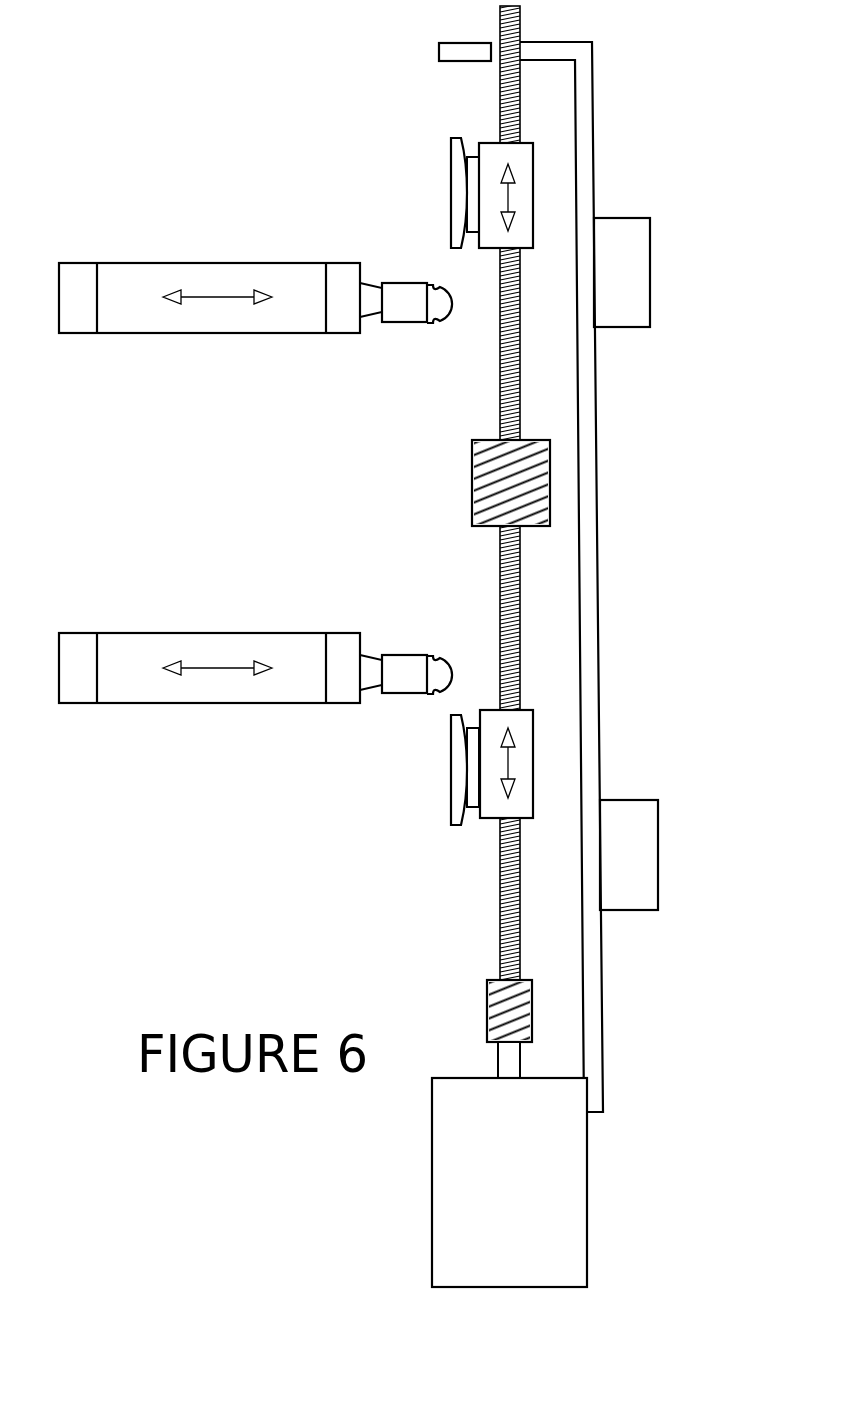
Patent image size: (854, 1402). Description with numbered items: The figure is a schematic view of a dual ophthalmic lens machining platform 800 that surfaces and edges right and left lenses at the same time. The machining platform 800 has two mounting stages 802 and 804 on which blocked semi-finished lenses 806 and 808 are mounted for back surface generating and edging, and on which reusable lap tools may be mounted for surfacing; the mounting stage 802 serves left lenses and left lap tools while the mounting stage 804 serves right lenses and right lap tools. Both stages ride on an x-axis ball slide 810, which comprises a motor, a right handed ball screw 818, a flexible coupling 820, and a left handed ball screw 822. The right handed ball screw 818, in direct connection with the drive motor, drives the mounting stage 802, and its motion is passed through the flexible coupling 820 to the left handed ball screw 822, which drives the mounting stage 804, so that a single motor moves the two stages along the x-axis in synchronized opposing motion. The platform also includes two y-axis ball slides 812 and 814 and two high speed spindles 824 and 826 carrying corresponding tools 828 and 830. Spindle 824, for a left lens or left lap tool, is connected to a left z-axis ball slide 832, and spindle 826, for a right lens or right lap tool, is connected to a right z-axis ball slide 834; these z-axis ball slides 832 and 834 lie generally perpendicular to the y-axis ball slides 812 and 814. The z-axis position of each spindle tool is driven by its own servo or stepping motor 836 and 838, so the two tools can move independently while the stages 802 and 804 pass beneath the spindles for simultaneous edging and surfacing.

The machining platform 800 is at (233, 872).
The mounting stage 802 is at (537, 745).
The mounting stage 804 is at (523, 250).
The blocked semi-finished lens 806 is at (450, 752).
The blocked semi-finished lens 808 is at (455, 248).
The x-axis ball slide 810 is at (492, 1287).
The y-axis ball slide 812 is at (658, 838).
The y-axis ball slide 814 is at (650, 242).
The right handed ball screw 818 is at (520, 883).
The flexible coupling 820 is at (540, 527).
The left handed ball screw 822 is at (520, 70).
The high speed spindle 824 is at (345, 633).
The high speed spindle 826 is at (348, 263).
The tool 828 is at (432, 655).
The tool 830 is at (413, 322).
The left z-axis ball slide 832 is at (200, 633).
The right z-axis ball slide 834 is at (262, 263).
The servo motor or stepping motor 836 is at (80, 633).
The servo motor or stepping motor 838 is at (77, 263).